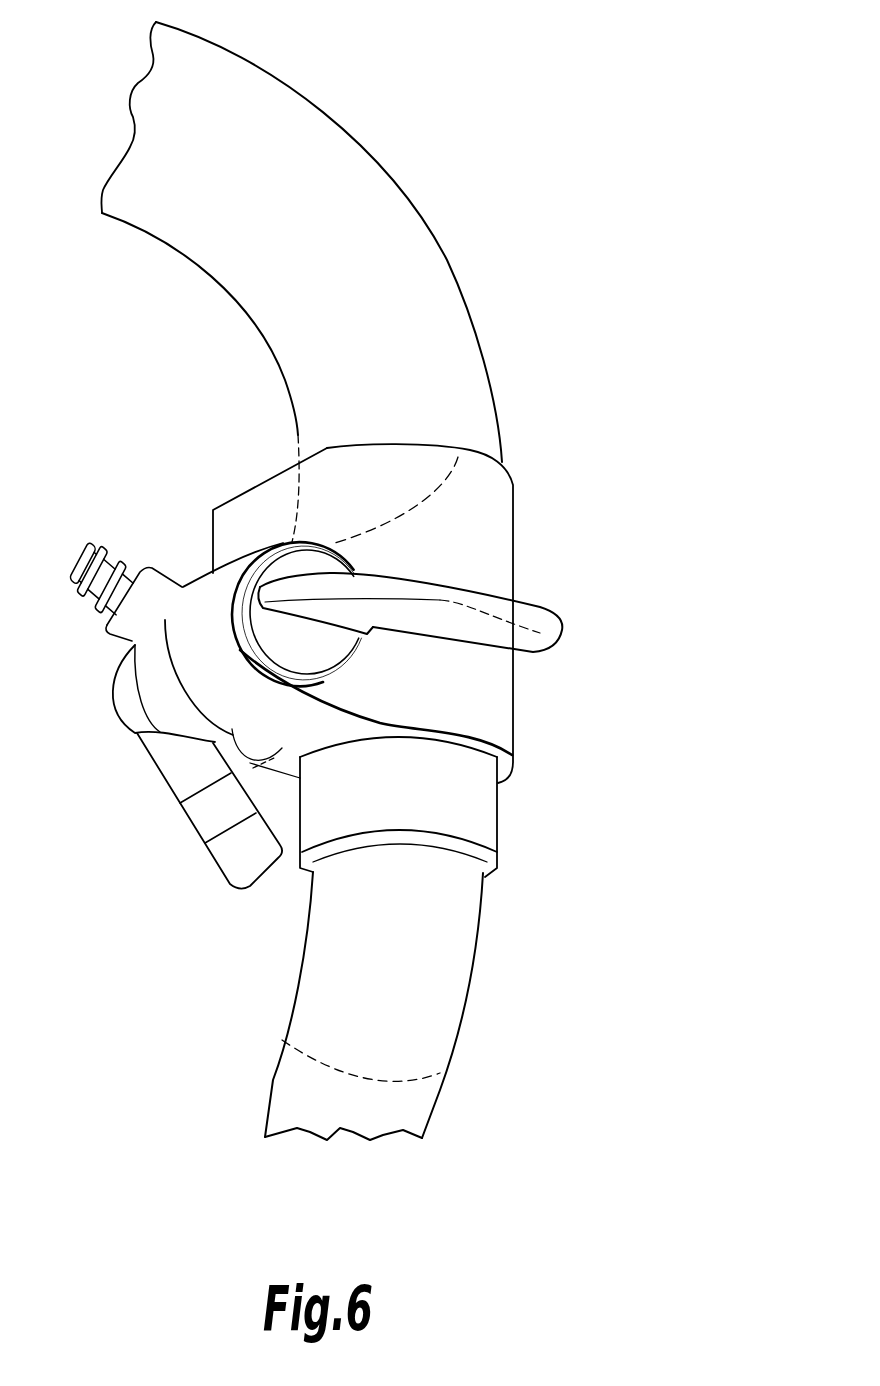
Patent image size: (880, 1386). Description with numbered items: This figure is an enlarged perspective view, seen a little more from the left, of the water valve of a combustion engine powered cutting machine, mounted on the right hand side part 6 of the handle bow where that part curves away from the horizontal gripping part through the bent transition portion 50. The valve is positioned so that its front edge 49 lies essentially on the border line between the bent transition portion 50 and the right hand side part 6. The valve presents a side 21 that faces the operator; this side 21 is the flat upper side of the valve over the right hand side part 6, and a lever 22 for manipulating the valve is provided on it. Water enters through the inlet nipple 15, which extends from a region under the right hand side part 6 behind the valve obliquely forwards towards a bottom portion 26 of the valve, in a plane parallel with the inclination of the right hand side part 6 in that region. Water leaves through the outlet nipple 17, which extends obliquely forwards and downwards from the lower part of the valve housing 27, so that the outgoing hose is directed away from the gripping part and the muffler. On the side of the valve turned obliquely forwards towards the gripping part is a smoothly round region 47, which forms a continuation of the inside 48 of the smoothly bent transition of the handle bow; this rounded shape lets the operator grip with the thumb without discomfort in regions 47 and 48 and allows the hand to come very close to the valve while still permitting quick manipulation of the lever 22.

The right hand side part 6 is at (442, 980).
The inlet nipple 15 is at (202, 815).
The outlet nipple 17 is at (72, 588).
The side 21 is at (488, 522).
The lever 22 is at (527, 643).
The bottom portion 26 is at (110, 710).
The valve housing 27 is at (200, 600).
The smoothly round region 47 is at (352, 480).
The inside 48 is at (205, 270).
The front edge 49 is at (475, 453).
The bent transition portion 50 is at (385, 208).